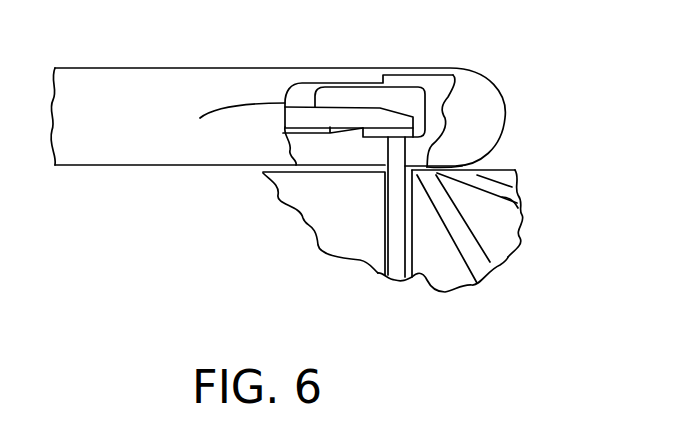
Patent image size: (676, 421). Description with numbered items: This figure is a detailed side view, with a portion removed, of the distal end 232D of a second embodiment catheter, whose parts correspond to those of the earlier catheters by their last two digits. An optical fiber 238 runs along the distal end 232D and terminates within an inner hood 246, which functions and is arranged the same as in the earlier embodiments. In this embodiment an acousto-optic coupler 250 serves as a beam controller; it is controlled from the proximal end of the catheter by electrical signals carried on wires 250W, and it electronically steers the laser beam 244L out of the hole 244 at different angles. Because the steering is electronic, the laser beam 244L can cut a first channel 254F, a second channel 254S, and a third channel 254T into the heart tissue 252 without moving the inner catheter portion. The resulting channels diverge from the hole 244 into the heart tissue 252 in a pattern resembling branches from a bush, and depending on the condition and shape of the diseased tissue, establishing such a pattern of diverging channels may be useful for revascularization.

The distal end 232D is at (257, 48).
The optical fiber 238 is at (200, 118).
The inner hood 246 is at (383, 85).
The acousto-optic coupler 250 is at (453, 75).
The wires 250W is at (283, 128).
The hole 244 is at (371, 168).
The laser beam 244L is at (460, 167).
The heart tissue 252 is at (355, 263).
The first channel 254F is at (520, 208).
The second channel 254S is at (478, 242).
The third channel 254T is at (428, 283).